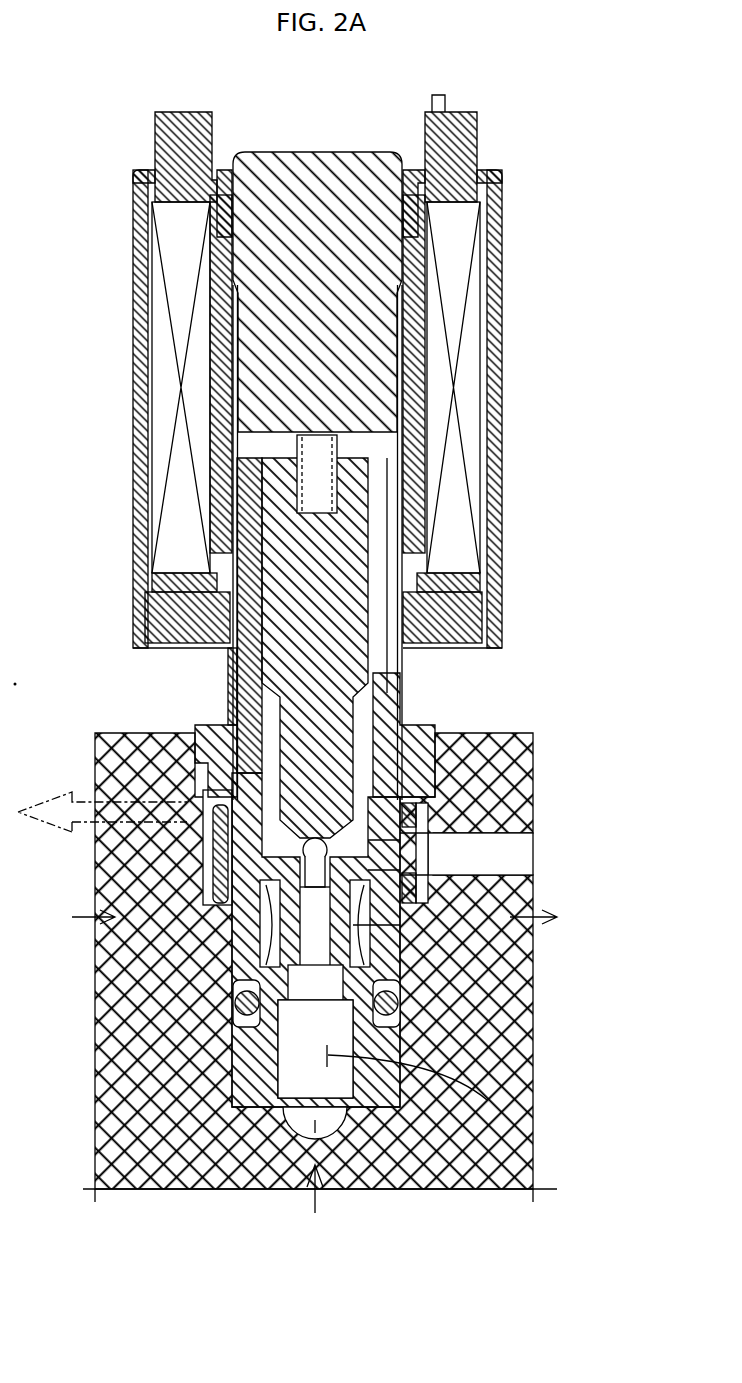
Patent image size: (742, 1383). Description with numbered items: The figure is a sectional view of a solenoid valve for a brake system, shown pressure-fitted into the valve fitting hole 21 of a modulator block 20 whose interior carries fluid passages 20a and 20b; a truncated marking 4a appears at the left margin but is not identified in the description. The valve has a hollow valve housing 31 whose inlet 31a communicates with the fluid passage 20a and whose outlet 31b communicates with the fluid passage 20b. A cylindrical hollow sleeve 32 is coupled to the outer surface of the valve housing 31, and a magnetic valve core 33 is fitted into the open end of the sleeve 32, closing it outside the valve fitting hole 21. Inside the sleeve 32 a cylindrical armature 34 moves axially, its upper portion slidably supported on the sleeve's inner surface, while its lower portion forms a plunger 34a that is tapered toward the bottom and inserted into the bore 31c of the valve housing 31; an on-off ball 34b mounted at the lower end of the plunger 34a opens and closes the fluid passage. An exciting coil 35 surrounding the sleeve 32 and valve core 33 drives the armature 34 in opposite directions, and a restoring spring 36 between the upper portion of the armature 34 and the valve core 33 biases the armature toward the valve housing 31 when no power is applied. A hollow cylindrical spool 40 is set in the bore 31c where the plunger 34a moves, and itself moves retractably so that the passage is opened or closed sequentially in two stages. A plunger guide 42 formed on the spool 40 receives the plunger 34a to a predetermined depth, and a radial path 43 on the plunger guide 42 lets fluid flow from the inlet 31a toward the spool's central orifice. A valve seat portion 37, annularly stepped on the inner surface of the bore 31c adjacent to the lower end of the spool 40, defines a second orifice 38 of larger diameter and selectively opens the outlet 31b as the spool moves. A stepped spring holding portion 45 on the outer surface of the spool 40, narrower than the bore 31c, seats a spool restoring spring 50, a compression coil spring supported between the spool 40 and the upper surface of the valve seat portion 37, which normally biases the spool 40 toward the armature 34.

The modulator block 20 is at (128, 740).
The fluid passage 20a is at (410, 875).
The fluid passage 20b is at (320, 1127).
The inlet passage 4a is at (278, 870).
The valve fitting hole 21 is at (210, 840).
The valve housing 31 is at (350, 765).
The inlet 31a is at (400, 850).
The outlet 31b is at (487, 1100).
The bore 31c is at (385, 698).
The sleeve 32 is at (407, 530).
The valve core 33 is at (315, 150).
The armature 34 is at (263, 547).
The plunger 34a is at (235, 678).
The on-off ball 34b is at (195, 905).
The exciting coil 35 is at (473, 308).
The restoring spring 36 is at (395, 465).
The valve seat portion 37 is at (352, 968).
The second orifice 38 is at (400, 1010).
The spool 40 is at (268, 913).
The plunger guide 42 is at (380, 770).
The radial path 43 is at (413, 813).
The spring holding portion 45 is at (233, 960).
The spool restoring spring 50 is at (370, 930).